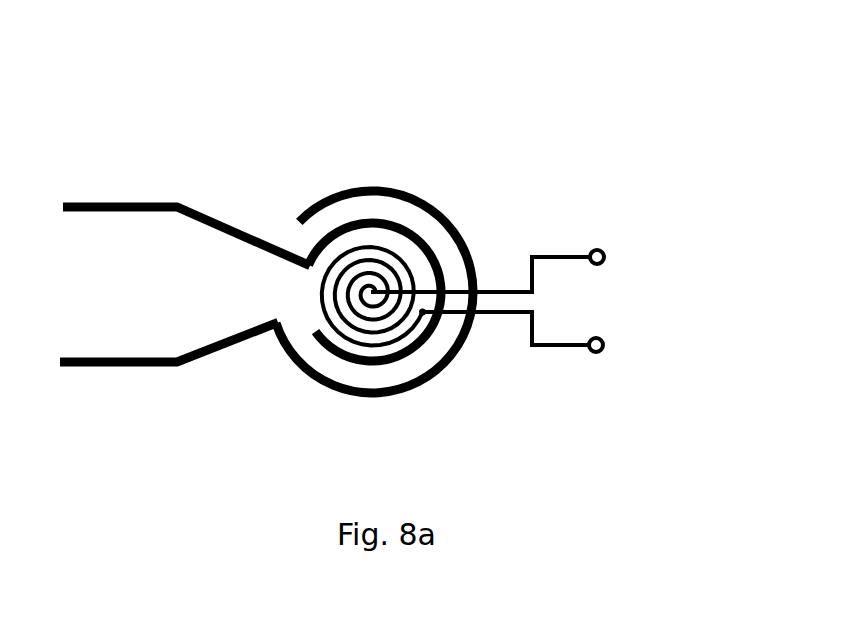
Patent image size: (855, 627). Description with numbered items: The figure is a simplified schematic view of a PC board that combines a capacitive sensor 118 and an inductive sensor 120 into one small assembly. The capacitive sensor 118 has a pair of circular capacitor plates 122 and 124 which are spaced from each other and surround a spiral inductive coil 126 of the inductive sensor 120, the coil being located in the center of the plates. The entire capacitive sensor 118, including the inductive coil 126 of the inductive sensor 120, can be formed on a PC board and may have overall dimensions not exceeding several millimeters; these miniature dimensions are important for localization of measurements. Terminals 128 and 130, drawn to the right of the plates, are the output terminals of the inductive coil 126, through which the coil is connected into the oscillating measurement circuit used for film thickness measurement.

The capacitive sensor 118 is at (299, 177).
The inductive sensor 120 is at (471, 274).
The circular capacitor plate 122 is at (373, 187).
The circular capacitor plate 124 is at (387, 363).
The spiral inductive coil 126 is at (391, 268).
The output terminal 128 is at (563, 257).
The output terminal 130 is at (563, 346).